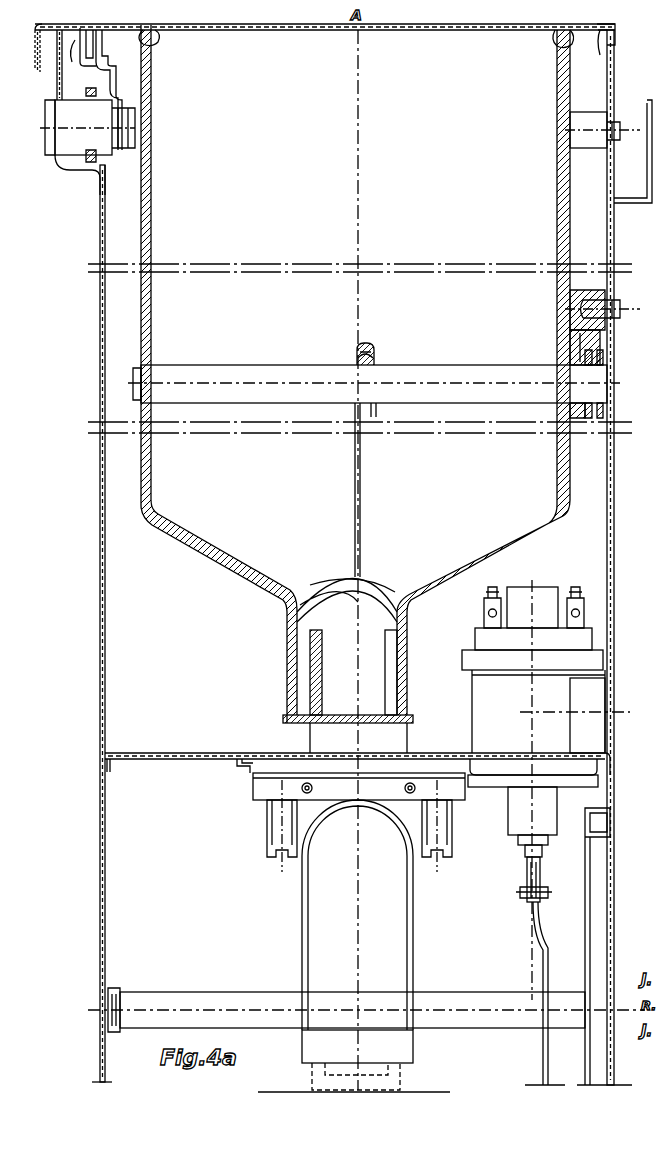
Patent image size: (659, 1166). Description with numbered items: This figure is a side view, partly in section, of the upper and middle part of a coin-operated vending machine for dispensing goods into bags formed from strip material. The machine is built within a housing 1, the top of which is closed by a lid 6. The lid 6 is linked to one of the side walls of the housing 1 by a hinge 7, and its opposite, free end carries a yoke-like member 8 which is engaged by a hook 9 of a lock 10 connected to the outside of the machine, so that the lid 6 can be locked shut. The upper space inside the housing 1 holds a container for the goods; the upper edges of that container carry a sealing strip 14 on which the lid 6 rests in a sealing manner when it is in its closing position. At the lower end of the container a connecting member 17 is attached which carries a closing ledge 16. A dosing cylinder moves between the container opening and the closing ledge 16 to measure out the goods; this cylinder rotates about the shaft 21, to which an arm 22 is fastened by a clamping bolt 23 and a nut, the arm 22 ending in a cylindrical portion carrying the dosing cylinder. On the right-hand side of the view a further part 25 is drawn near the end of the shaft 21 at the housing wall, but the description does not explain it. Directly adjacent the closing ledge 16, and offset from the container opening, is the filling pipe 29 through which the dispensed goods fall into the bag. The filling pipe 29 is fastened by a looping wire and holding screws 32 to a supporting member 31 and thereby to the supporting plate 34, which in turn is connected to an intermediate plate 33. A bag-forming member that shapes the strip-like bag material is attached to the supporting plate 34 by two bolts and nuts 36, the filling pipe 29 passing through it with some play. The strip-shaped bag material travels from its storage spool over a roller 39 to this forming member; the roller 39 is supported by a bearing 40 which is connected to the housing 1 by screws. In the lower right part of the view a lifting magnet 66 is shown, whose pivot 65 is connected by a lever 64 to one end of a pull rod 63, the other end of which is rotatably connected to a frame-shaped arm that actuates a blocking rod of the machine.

The housing 1 is at (100, 520).
The lid 6 is at (216, 30).
The hinge 7 is at (612, 52).
The yoke-like member 8 is at (81, 56).
The hook 9 is at (100, 50).
The lock 10 is at (62, 133).
The sealing strip 14 is at (150, 33).
The closing ledge 16 is at (300, 724).
The connecting member 17 is at (290, 660).
The shaft 21 is at (280, 368).
The arm 22 is at (355, 413).
The clamping bolt 23 is at (376, 358).
The support bracket 25 is at (598, 418).
The filling pipe 29 is at (404, 741).
The supporting member 31 is at (256, 789).
The holding screws 32 is at (313, 788).
The intermediate plate 33 is at (165, 760).
The supporting plate 34 is at (240, 765).
The nuts 36 is at (268, 836).
The roller 39 is at (235, 997).
The bearing 40 is at (115, 990).
The pull rod 63 is at (543, 1048).
The lever 64 is at (541, 882).
The pivot 65 is at (522, 892).
The lifting magnet 66 is at (480, 688).